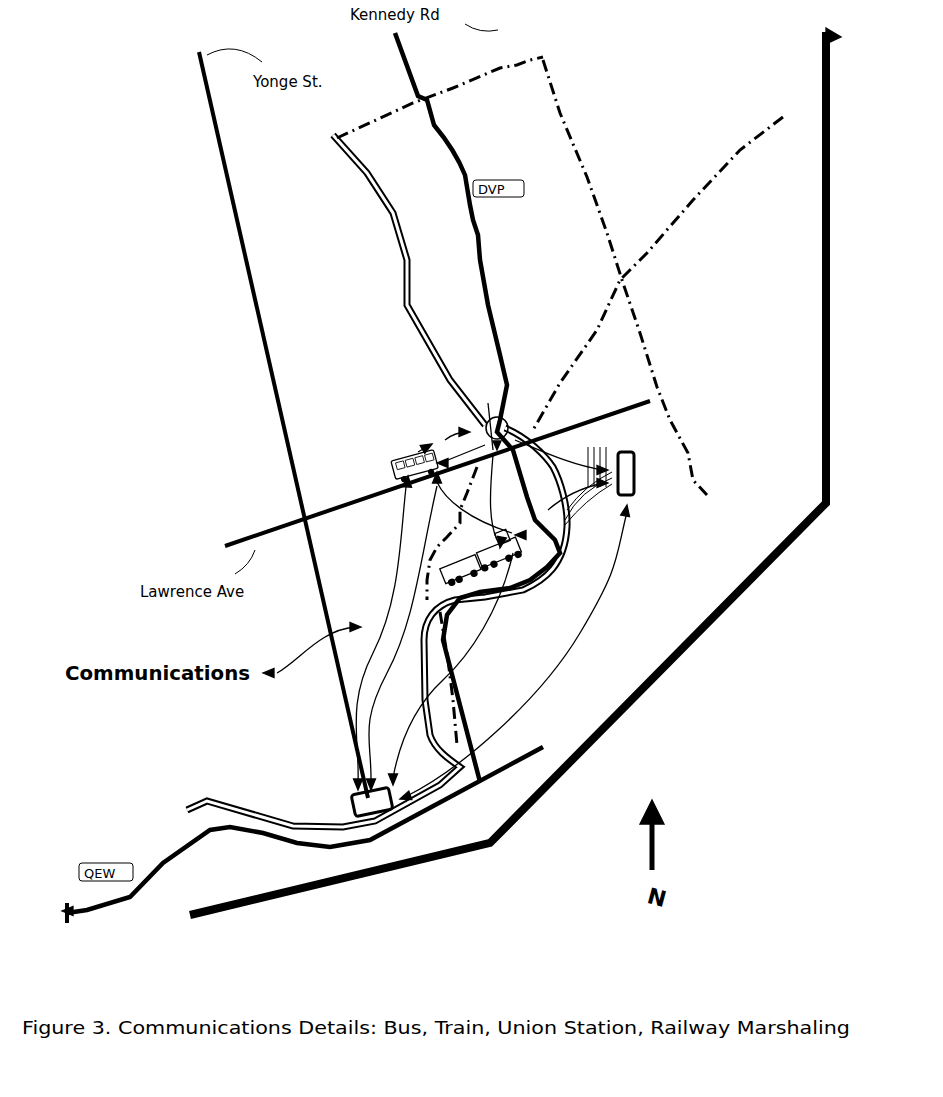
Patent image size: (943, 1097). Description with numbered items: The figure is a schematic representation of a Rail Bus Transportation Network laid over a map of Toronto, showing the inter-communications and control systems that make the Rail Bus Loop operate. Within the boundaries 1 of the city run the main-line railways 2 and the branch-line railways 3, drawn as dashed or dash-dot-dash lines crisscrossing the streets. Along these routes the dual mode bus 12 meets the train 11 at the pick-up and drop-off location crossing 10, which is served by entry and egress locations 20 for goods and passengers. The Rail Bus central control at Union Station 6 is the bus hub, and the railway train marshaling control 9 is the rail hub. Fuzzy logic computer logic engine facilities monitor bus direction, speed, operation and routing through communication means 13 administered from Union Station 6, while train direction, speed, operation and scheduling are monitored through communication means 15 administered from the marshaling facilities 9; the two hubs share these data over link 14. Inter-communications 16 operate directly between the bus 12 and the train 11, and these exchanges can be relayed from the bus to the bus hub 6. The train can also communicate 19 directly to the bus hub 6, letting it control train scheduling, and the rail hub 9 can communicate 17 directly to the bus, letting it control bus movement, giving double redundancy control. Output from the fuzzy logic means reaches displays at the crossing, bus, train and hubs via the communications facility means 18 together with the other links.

The boundaries of Toronto 1 is at (470, 858).
The main-line railways 2 is at (187, 810).
The branch-line railways 3 is at (645, 265).
The Union Station bus hub 6 is at (353, 803).
The railway train marshaling control 9 is at (637, 465).
The pick-up and drop-off location crossing 10 is at (502, 420).
The train 11 is at (500, 556).
The bus 12 is at (398, 477).
The bus monitoring communication means 13 is at (396, 575).
The bus hub to rail hub communication 14 is at (518, 732).
The train monitoring communication means 15 is at (550, 578).
The bus-train inter-communications 16 is at (442, 484).
The rail hub to bus communication 17 is at (580, 470).
The communications facility means 18 is at (385, 700).
The train to bus hub communication 19 is at (465, 668).
The entry and egress locations 20 is at (445, 440).